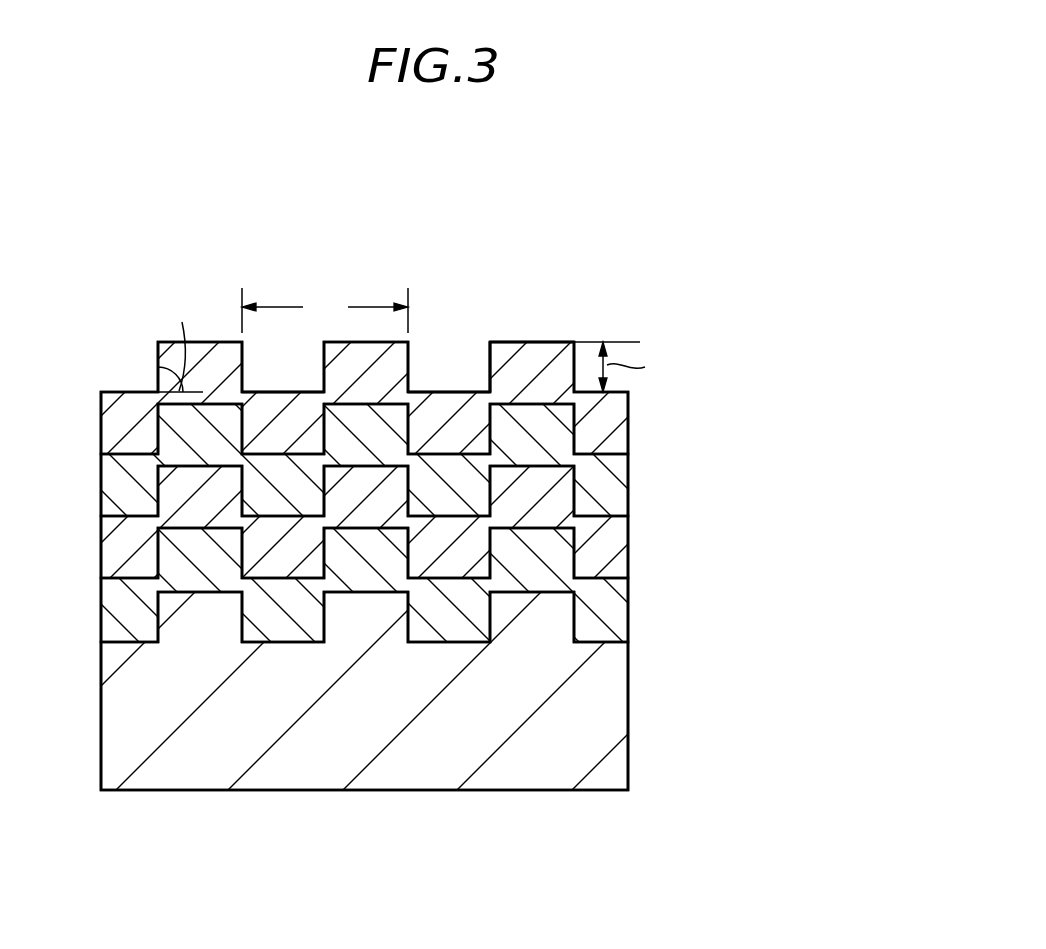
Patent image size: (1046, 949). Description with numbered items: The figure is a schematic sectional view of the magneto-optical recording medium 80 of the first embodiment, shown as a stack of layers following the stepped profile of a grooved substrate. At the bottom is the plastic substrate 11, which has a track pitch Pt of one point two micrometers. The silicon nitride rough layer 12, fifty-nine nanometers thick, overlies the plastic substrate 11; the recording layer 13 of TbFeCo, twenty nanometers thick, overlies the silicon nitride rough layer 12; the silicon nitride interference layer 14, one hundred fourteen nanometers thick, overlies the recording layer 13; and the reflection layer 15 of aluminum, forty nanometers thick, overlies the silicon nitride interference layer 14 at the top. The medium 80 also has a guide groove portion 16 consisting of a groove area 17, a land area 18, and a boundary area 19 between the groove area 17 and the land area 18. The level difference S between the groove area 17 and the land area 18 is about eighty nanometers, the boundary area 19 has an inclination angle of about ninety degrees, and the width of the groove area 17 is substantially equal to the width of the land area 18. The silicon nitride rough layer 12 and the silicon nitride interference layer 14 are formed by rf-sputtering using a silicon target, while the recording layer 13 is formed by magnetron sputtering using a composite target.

The magneto-optical recording medium 80 is at (150, 325).
The guide groove portion 16 is at (426, 388).
The groove area 17 is at (453, 392).
The boundary area 19 is at (489, 367).
The land area 18 is at (527, 340).
The reflection layer 15 is at (607, 424).
The silicon nitride interference layer 14 is at (608, 490).
The recording layer 13 is at (608, 563).
The silicon nitride rough layer 12 is at (608, 620).
The plastic substrate 11 is at (608, 721).